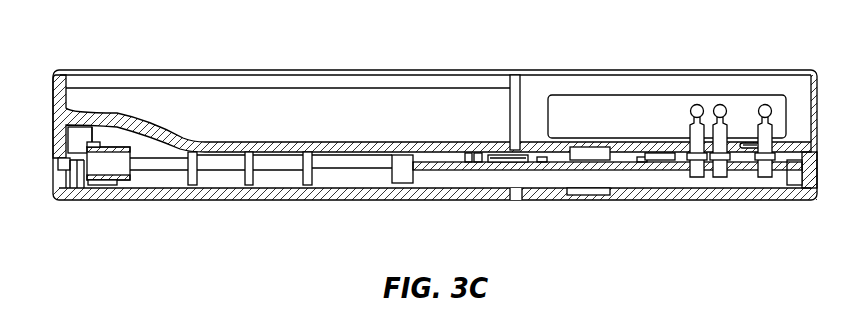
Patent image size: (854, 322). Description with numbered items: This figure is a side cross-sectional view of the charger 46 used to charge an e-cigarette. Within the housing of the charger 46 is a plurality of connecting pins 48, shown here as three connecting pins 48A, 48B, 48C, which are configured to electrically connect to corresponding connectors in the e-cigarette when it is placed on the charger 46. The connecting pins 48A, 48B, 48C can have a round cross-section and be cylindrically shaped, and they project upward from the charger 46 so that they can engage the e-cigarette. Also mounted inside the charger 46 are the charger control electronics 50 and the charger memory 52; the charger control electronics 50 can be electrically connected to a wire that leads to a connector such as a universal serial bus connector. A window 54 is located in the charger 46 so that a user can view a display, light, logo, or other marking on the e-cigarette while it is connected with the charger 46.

The charger 46 is at (219, 49).
The connecting pins 48 is at (771, 105).
The connecting pin 48A is at (765, 177).
The connecting pin 48B is at (720, 177).
The connecting pin 48C is at (697, 177).
The charger control electronics 50 is at (548, 170).
The charger memory 52 is at (502, 163).
The window 54 is at (598, 113).